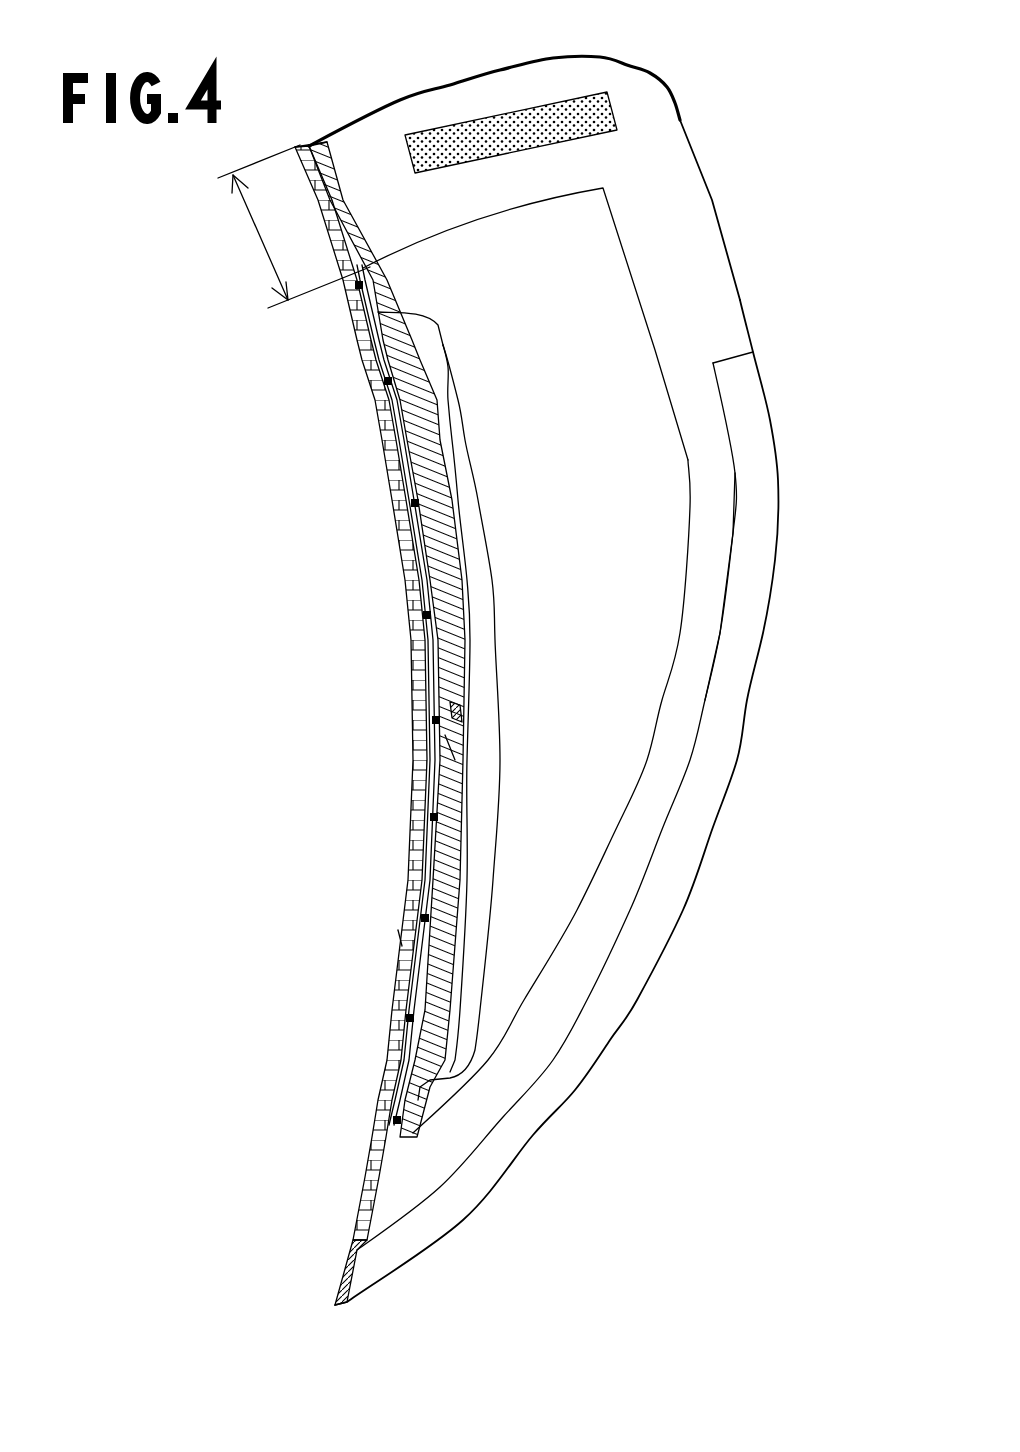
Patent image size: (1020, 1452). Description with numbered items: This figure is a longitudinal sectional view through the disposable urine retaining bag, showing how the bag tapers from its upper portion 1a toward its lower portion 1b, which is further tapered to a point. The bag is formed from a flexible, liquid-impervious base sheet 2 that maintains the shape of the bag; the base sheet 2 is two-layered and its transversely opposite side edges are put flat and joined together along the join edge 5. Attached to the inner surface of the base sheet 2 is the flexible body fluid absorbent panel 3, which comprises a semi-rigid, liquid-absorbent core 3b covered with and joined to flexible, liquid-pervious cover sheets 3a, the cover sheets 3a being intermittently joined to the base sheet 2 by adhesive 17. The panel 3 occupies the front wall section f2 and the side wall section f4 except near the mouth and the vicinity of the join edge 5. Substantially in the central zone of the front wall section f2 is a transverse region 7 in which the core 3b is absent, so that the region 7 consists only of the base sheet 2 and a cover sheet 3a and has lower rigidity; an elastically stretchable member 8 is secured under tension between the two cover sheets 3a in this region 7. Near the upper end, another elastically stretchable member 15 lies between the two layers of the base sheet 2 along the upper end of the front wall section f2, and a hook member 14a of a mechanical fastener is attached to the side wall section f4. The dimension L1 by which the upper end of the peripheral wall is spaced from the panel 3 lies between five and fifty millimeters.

The upper portion 1a is at (598, 160).
The lower portion 1b is at (432, 1185).
The base sheet 2 is at (698, 247).
The body fluid absorbent panel 3 is at (662, 633).
The cover sheet 3a is at (428, 400).
The core 3b is at (440, 540).
The join edge 5 is at (763, 442).
The region 7 is at (453, 747).
The elastically stretchable member 8 is at (457, 712).
The hook member 14a is at (505, 115).
The elastically stretchable member 15 is at (328, 158).
The adhesive 17 is at (360, 285).
The front wall section f2 is at (402, 938).
The side wall section f4 is at (715, 527).
The dimension L1 is at (294, 226).